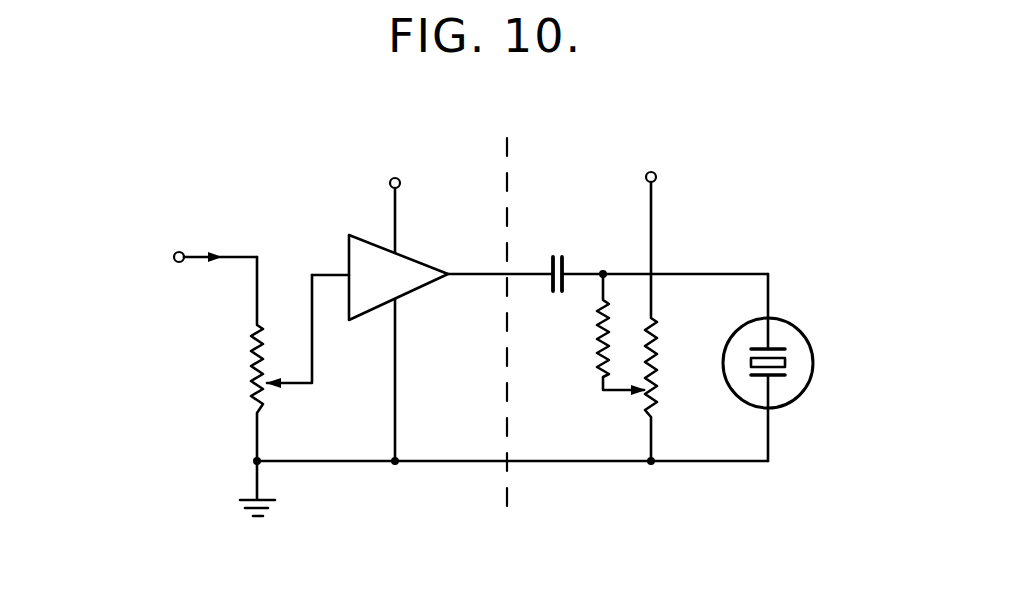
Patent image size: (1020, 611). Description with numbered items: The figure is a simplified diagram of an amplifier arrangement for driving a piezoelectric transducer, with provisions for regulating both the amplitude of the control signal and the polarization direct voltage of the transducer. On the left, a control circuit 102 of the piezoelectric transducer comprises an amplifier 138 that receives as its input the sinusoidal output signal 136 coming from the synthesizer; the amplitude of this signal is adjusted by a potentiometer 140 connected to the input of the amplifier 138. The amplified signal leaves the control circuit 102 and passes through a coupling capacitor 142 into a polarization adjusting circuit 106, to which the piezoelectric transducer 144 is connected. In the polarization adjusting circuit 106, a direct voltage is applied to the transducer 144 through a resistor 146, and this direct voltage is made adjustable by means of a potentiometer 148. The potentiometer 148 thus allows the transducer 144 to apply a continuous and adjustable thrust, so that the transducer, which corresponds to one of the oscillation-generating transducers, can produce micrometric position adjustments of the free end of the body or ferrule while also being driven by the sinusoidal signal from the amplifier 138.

The control circuit 102 is at (282, 177).
The polarization adjusting circuit 106 is at (743, 202).
The sinusoidal output signal 136 is at (179, 252).
The amplifier 138 is at (370, 236).
The potentiometer 140 is at (252, 355).
The coupling capacitor 142 is at (568, 260).
The piezoelectric transducer 144 is at (797, 333).
The resistor 146 is at (600, 338).
The potentiometer 148 is at (657, 348).